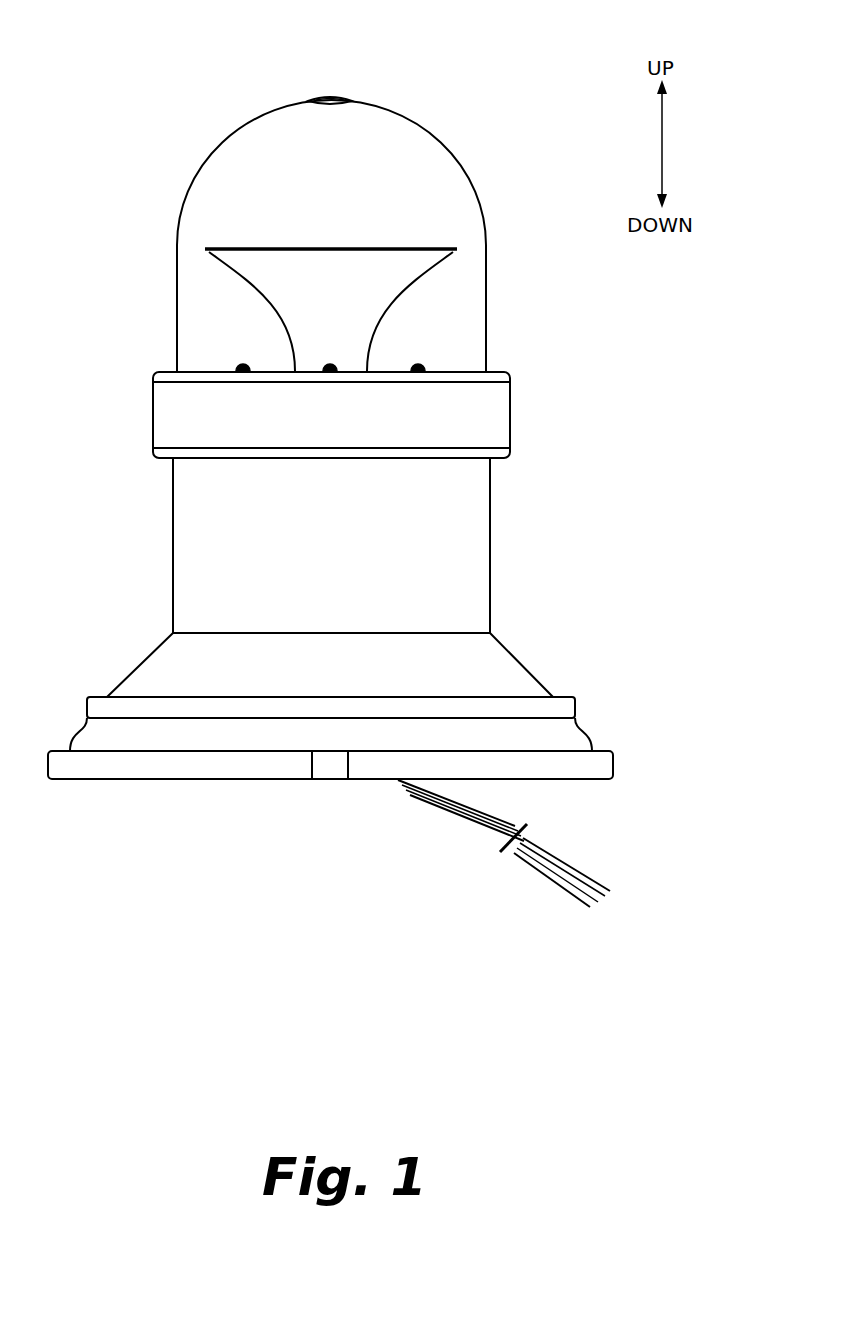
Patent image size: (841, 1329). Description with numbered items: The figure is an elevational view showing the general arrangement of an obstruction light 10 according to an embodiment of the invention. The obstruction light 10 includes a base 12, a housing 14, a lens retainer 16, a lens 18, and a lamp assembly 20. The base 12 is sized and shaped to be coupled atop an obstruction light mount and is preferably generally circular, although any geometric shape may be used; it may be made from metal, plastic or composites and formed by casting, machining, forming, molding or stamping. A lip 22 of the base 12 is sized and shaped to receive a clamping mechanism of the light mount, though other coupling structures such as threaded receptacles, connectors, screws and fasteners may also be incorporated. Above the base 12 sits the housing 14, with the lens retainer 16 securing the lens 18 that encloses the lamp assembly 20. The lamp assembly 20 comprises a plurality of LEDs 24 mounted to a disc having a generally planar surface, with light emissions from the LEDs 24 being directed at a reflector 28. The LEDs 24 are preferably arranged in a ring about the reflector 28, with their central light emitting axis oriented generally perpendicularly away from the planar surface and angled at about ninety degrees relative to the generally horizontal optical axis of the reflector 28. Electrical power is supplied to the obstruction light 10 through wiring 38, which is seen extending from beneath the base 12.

The obstruction light 10 is at (150, 38).
The base 12 is at (613, 765).
The housing 14 is at (173, 548).
The lens retainer 16 is at (510, 421).
The lens 18 is at (177, 275).
The lamp assembly 20 is at (290, 230).
The lip 22 is at (563, 697).
The LEDs 24 is at (245, 366).
The reflector 28 is at (338, 247).
The wiring 38 is at (532, 833).